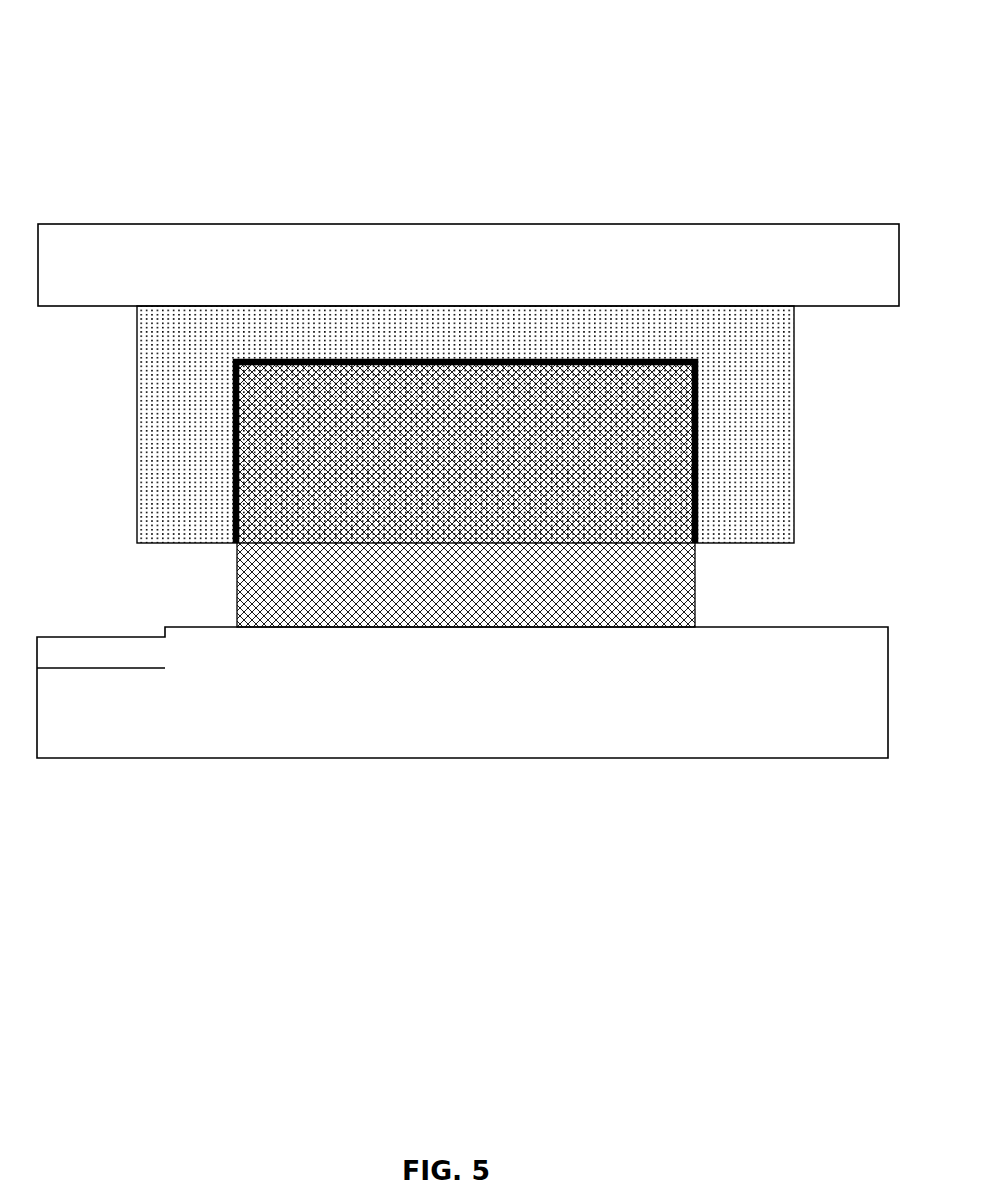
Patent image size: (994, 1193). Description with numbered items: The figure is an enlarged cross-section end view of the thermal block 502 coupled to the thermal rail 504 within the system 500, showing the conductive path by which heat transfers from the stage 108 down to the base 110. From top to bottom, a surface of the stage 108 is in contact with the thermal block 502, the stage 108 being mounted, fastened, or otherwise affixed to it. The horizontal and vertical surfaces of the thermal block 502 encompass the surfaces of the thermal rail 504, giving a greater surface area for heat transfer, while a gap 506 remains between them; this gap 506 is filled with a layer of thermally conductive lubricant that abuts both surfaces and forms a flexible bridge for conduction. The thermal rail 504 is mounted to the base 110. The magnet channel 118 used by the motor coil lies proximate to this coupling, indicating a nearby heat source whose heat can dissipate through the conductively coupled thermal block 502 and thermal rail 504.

The system 500 is at (218, 63).
The stage 108 is at (674, 223).
The thermal block 502 is at (208, 544).
The thermal rail 504 is at (696, 607).
The gap 506 is at (233, 457).
The base 110 is at (768, 759).
The magnet channel 118 is at (78, 669).